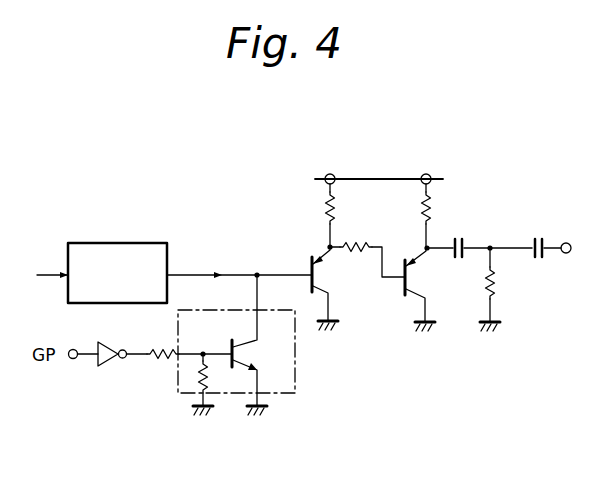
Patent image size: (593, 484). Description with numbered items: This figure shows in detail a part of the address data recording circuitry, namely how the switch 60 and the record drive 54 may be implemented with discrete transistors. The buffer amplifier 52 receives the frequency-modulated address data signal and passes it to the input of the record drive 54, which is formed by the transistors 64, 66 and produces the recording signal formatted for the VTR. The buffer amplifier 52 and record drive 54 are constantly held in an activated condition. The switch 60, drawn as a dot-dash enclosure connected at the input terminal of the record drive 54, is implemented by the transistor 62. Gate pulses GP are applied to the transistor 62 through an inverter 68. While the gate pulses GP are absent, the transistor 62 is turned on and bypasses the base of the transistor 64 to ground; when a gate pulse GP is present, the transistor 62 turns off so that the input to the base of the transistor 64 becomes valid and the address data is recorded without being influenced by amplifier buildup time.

The buffer amplifier 52 is at (142, 243).
The record drive 54 is at (373, 196).
The switch 60 is at (298, 362).
The transistor 62 is at (236, 368).
The transistor 64 is at (310, 262).
The transistor 66 is at (400, 285).
The inverter 68 is at (100, 366).